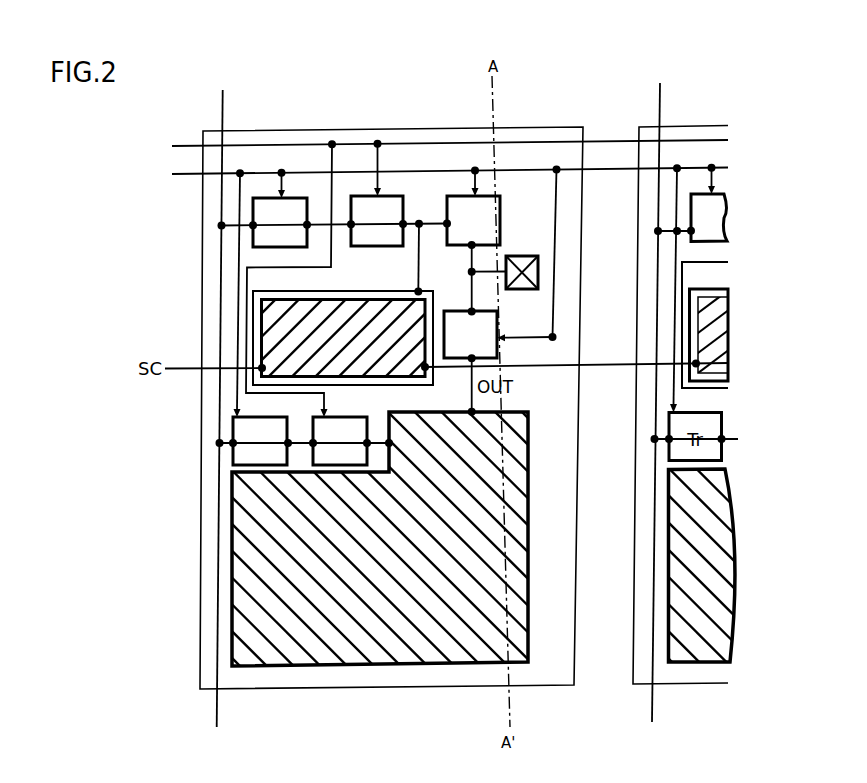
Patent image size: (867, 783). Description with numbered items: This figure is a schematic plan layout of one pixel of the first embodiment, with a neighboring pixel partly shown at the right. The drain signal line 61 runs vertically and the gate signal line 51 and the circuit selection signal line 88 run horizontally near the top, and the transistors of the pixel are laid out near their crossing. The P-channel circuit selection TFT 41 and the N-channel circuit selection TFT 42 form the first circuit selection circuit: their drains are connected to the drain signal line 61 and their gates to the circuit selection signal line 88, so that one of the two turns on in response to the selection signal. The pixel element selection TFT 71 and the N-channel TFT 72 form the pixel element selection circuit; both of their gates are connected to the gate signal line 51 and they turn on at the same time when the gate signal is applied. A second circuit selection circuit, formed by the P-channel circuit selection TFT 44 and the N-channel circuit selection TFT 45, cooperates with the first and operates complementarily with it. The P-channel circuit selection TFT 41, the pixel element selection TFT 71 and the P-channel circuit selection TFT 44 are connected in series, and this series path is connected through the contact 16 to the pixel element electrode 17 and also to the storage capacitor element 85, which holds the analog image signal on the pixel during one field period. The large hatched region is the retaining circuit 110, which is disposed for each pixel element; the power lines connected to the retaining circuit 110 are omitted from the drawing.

The pixel element electrode 17 is at (320, 690).
The drain signal line 61 is at (231, 397).
The gate signal line 51 is at (417, 146).
The circuit selection signal line 88 is at (390, 187).
The P-channel circuit selection TFT 41 is at (297, 199).
The pixel element selection TFT 71 is at (395, 199).
The P-channel circuit selection TFT 44 is at (458, 199).
The contact 16 is at (539, 270).
The N-channel circuit selection TFT 45 is at (492, 323).
The storage capacitor element 85 is at (278, 313).
The N-channel circuit selection TFT 42 is at (245, 423).
The N-channel TFT 72 is at (355, 420).
The retaining circuit 110 is at (238, 497).